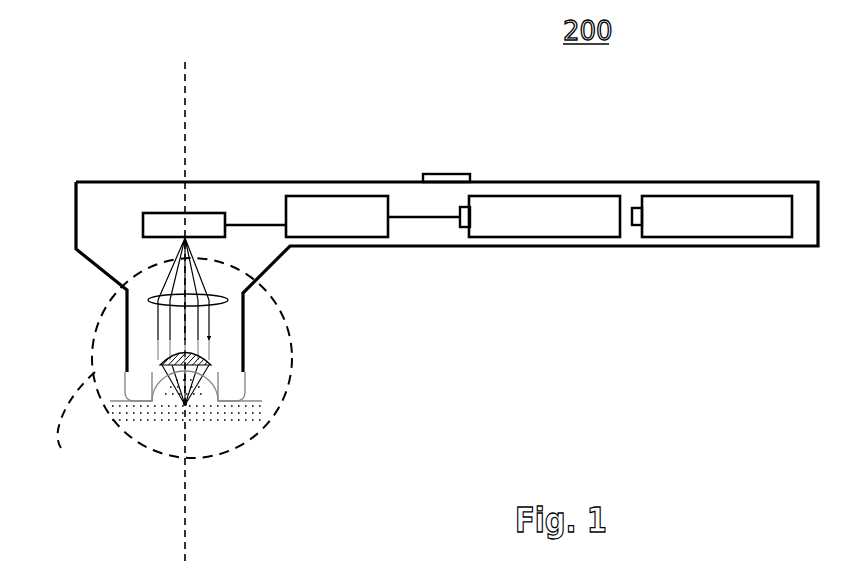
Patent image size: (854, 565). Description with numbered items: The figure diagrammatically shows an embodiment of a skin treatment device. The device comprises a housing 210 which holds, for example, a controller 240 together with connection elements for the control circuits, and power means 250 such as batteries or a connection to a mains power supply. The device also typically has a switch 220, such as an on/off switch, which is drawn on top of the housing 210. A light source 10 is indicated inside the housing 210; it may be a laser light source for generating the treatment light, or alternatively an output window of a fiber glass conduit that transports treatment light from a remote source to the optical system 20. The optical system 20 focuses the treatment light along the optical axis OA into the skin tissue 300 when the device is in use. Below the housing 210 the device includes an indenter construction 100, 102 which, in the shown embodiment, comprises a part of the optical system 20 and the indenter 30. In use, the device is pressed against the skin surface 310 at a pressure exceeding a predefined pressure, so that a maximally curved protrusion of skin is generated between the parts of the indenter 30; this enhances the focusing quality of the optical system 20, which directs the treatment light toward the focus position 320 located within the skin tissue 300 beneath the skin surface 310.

The housing 210 is at (108, 197).
The light source 10 is at (203, 226).
The optical system 20 is at (157, 355).
The indenter 30 is at (130, 385).
The switch 220 is at (447, 173).
The controller 240 is at (331, 213).
The power means 250 is at (680, 217).
The skin tissue 300 is at (220, 415).
The skin surface 310 is at (259, 395).
The focus position 320 is at (190, 413).
The indenter construction 100 is at (98, 428).
The indenter construction 102 is at (98, 428).
The optical axis OA is at (164, 306).